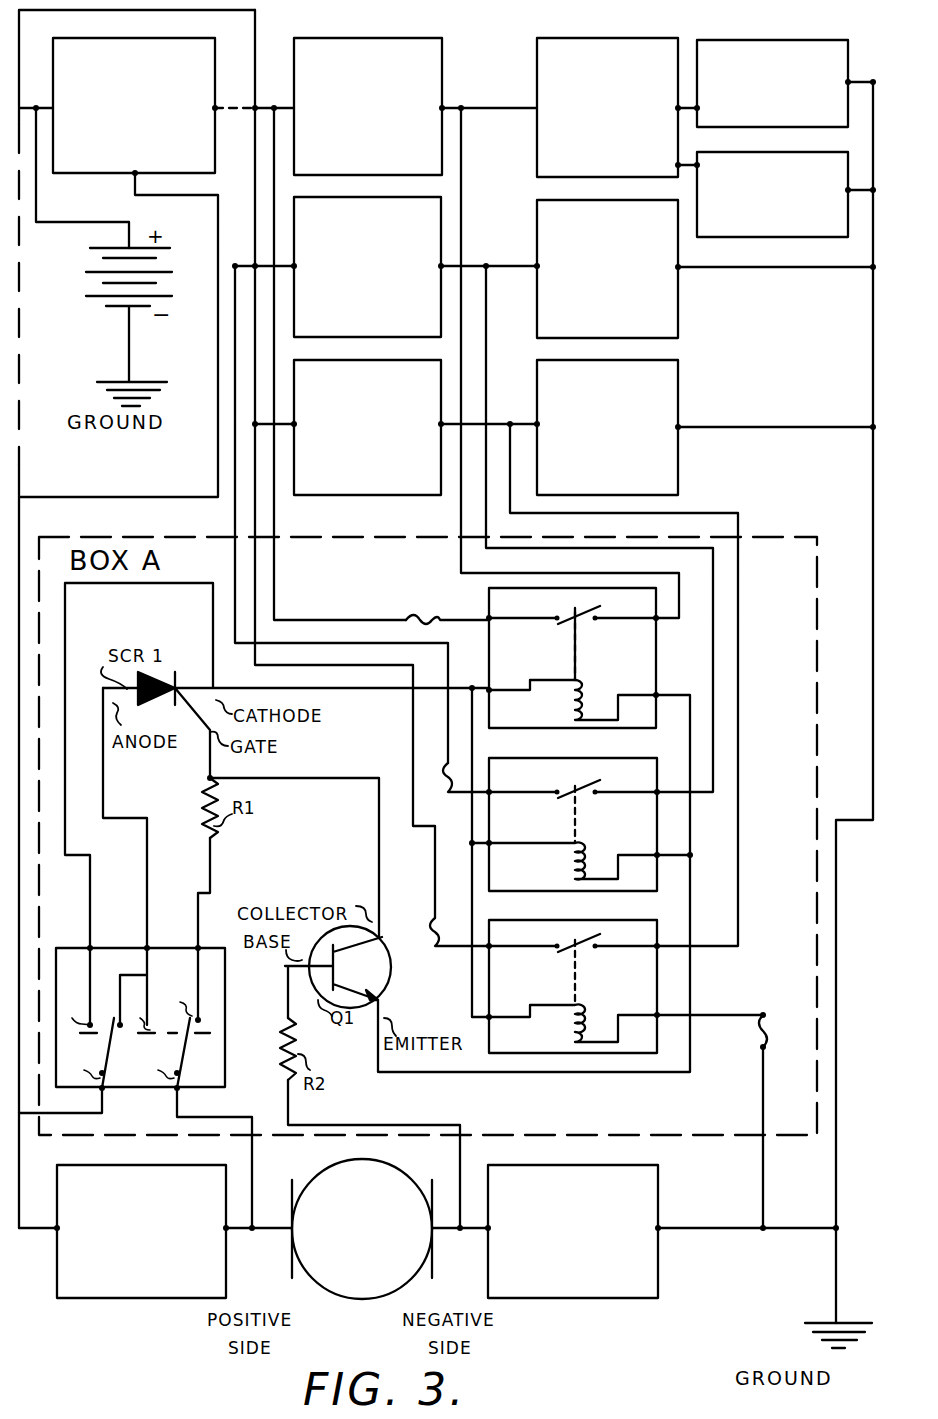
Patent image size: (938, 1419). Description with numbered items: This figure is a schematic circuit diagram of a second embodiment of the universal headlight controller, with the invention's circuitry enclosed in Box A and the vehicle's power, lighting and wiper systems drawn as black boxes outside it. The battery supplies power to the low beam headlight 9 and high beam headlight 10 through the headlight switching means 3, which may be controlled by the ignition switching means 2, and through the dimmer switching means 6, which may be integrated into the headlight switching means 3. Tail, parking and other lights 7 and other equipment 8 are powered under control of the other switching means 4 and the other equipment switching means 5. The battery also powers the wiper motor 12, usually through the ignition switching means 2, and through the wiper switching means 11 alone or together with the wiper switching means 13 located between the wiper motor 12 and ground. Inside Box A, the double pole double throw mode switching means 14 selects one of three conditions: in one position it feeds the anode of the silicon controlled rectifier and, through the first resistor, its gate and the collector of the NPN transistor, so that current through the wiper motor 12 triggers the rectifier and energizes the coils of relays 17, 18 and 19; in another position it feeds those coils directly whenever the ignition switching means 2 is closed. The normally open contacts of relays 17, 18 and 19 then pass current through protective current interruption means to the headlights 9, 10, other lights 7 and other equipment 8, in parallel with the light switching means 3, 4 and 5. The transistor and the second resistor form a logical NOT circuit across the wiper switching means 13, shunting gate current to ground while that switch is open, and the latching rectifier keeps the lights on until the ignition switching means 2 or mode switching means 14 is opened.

The ignition switching means 2 is at (134, 105).
The headlight switching means 3 is at (368, 106).
The other switching means 4 is at (367, 267).
The other equipment switching means 5 is at (367, 427).
The dimmer switching means 6 is at (607, 107).
The other lights 7 is at (607, 269).
The other equipment 8 is at (607, 427).
The low beam headlight 9 is at (772, 83).
The high beam headlight 10 is at (772, 194).
The wiper switching means 11 is at (141, 1231).
The wiper motor 12 is at (361, 1229).
The wiper switching means 13 is at (756, 1048).
The double pole double throw mode switching means 14 is at (116, 952).
The relay 17 is at (440, 618).
The relay 18 is at (440, 790).
The relay 19 is at (429, 937).